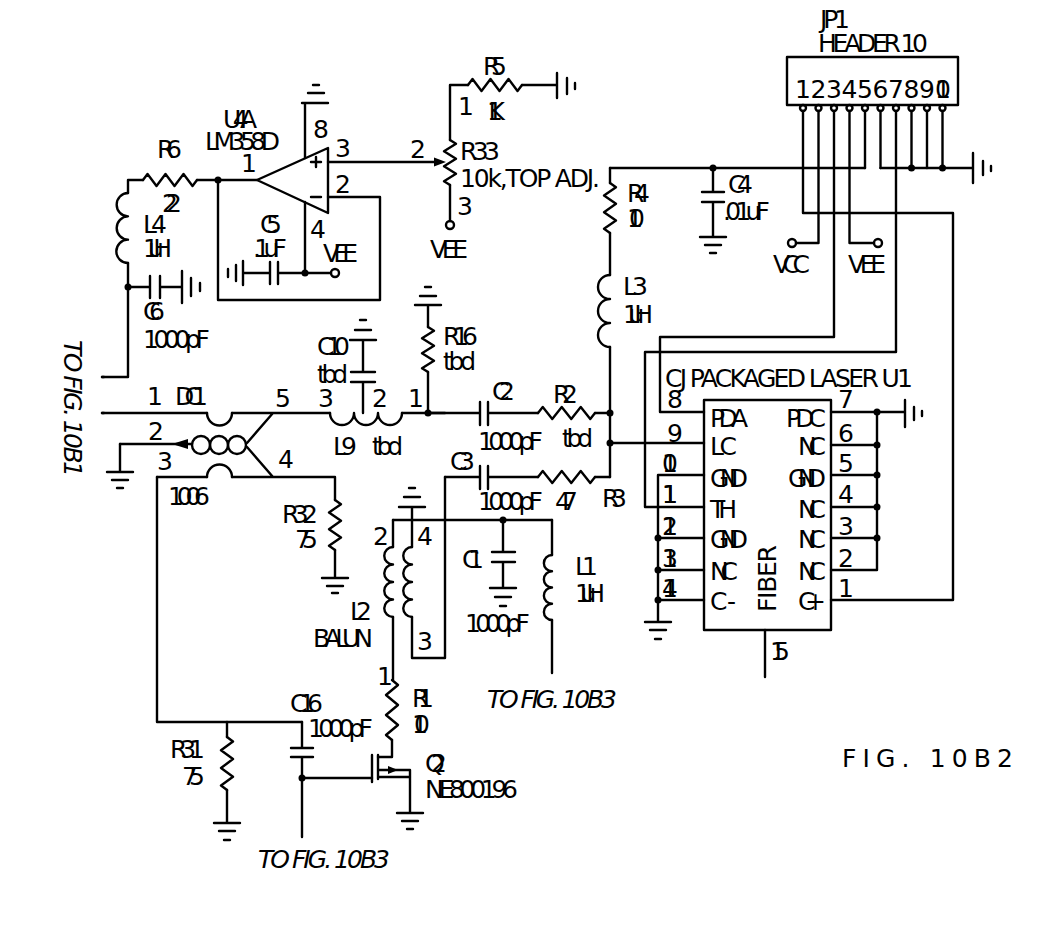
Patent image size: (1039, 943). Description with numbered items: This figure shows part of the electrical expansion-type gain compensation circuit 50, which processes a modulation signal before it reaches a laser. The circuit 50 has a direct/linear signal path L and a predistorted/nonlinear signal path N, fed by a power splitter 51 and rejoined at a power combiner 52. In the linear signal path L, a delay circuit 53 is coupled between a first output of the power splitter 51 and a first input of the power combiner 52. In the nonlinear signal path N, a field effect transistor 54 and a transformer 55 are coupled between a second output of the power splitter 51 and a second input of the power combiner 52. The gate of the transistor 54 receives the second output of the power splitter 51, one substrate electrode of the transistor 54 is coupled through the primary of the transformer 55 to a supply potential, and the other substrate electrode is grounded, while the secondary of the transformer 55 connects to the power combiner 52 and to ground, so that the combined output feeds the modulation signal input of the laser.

The electrical compensation circuit 50 is at (204, 628).
The power splitter 51 is at (233, 487).
The power combiner 52 is at (606, 440).
The delay circuit 53 is at (313, 387).
The field effect transistor 54 is at (375, 792).
The transformer 55 is at (382, 645).
The predistorted/nonlinear signal path N is at (153, 572).
The direct/linear signal path L is at (452, 406).